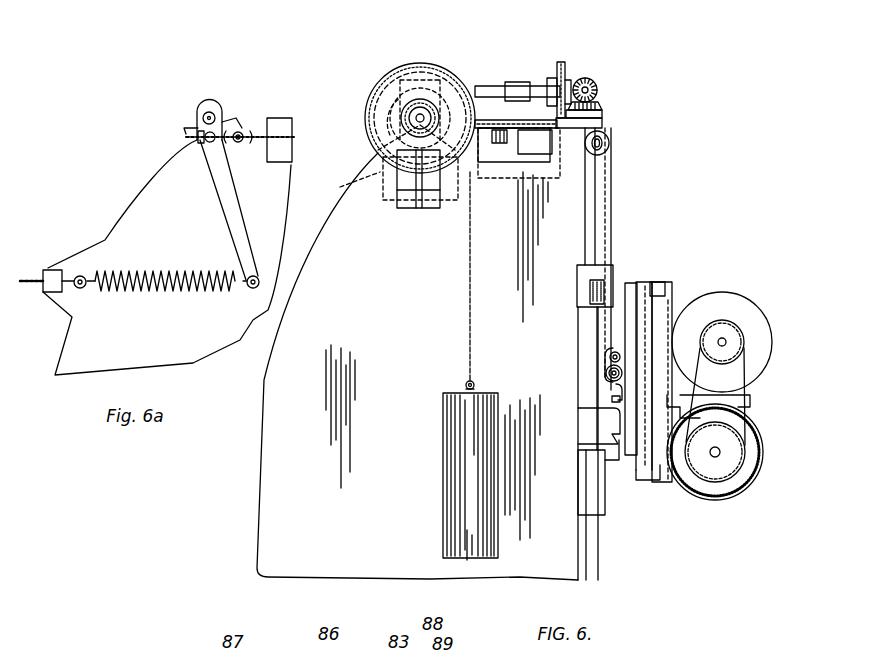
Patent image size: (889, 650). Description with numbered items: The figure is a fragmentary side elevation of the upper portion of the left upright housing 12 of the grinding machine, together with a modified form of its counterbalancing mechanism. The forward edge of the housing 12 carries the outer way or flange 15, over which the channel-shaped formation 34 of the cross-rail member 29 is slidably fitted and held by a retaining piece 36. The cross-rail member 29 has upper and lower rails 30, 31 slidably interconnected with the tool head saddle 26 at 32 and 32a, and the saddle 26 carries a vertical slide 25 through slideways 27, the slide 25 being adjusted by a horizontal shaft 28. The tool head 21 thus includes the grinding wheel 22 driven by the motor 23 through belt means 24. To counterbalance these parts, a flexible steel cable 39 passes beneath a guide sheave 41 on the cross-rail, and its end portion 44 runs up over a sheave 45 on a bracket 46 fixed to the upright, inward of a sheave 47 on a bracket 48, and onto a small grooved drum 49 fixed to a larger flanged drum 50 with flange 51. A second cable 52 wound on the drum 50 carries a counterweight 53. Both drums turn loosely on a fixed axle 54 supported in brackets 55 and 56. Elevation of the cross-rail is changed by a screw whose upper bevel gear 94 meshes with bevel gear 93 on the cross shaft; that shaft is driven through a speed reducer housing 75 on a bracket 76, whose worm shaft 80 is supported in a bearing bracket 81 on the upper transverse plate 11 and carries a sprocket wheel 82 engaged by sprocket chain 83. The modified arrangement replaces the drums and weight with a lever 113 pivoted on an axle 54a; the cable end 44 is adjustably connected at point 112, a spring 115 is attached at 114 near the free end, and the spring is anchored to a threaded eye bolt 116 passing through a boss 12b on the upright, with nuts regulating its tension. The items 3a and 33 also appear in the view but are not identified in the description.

In FIG. 6, the upright housing 12 is at (268, 538).
In FIG. 6A, the upright housing 12 is at (124, 224).
In FIG. 6, the larger drum 50 is at (396, 68).
In FIG. 6, the speed reducer housing 75 is at (412, 68).
In FIG. 6, the axle 54 is at (421, 110).
In FIG. 6, the small grooved drum 49 is at (370, 108).
In FIG. 6, the bracket 56 is at (382, 128).
In FIG. 6, the flange 51 is at (372, 138).
In FIG. 6, the bracket 76 is at (340, 186).
In FIG. 6, the bracket 55 is at (405, 207).
In FIG. 6, the shaft 80 is at (488, 88).
In FIG. 6, the sprocket wheel 82 is at (559, 70).
In FIG. 6, the sprocket chain 83 is at (563, 76).
In FIG. 6, the bearing bracket 81 is at (574, 78).
In FIG. 6, the bevel gear 93 is at (592, 86).
In FIG. 6, the bevel gear 94 is at (600, 106).
In FIG. 6, the upper transverse plate 11 is at (604, 125).
In FIG. 6, the cable end portion 44 is at (527, 120).
In FIG. 6A, the cable end portion 44 is at (279, 117).
In FIG. 6, the sheave 45 is at (611, 143).
In FIG. 6, the bracket 46 is at (557, 154).
In FIG. 6, the bracket 48 is at (500, 142).
In FIG. 6, the sheave 47 is at (478, 153).
In FIG. 6, the second cable 52 is at (467, 246).
In FIG. 6, the counterweight 53 is at (443, 476).
In FIG. 6, the outer way or flange 15 is at (596, 225).
In FIG. 6, the flexible steel cable 39 is at (606, 206).
In FIG. 6, the slide 3a is at (622, 196).
In FIG. 6, the retaining piece 36 is at (578, 278).
In FIG. 6, the guide sheave 41 is at (580, 292).
In FIG. 6, the upper rail 30 is at (586, 324).
In FIG. 6, the channel-shaped formation 34 is at (604, 500).
In FIG. 6, the horizontal shaft 28 is at (609, 357).
In FIG. 6, the pivot 33 is at (604, 373).
In FIG. 6, the cross-rail member 29 is at (607, 393).
In FIG. 6, the slidable interconnection 32a is at (601, 404).
In FIG. 6, the lower rail 31 is at (610, 424).
In FIG. 6, the slidable interconnection 32 is at (626, 282).
In FIG. 6, the slideways 27 is at (646, 468).
In FIG. 6, the tool head saddle 26 is at (640, 290).
In FIG. 6, the vertical slide 25 is at (668, 298).
In FIG. 6, the tool head 21 is at (748, 286).
In FIG. 6, the motor 23 is at (754, 318).
In FIG. 6, the belt means 24 is at (744, 394).
In FIG. 6, the grinding wheel 22 is at (746, 478).
In FIG. 6A, the axle 54a is at (209, 106).
In FIG. 6A, the lever 113 is at (228, 206).
In FIG. 6A, the spring connection point 114 is at (250, 288).
In FIG. 6A, the cable connection point 112 is at (198, 152).
In FIG. 6A, the spring 115 is at (136, 292).
In FIG. 6A, the threaded eye bolt 116 is at (56, 296).
In FIG. 6A, the boss 12b is at (50, 265).